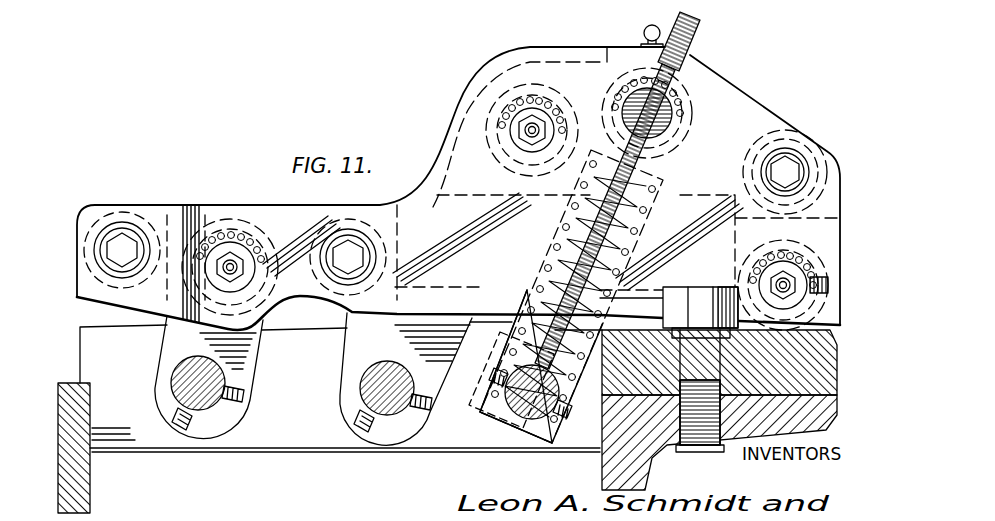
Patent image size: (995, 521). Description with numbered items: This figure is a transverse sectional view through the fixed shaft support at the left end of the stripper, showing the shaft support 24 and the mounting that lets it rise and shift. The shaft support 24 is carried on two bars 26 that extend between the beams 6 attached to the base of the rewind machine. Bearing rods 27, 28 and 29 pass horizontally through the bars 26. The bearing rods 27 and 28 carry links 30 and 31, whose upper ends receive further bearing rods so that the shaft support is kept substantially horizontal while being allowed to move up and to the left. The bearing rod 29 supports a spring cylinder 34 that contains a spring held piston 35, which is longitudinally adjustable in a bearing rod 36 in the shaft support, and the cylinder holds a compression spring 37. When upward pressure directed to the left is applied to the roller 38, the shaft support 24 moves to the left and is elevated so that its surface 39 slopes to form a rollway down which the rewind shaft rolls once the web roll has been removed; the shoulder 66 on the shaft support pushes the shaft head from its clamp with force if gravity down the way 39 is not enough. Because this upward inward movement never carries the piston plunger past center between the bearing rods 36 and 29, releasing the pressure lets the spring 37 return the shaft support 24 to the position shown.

The beams 6 is at (92, 472).
The shaft support 24 is at (173, 212).
The bars 26 is at (137, 371).
The bearing rod 27 is at (210, 407).
The bearing rod 28 is at (353, 392).
The bearing rod 29 is at (512, 408).
The link 30 is at (172, 344).
The link 31 is at (362, 345).
The spring cylinder 34 is at (664, 175).
The spring held piston 35 is at (703, 32).
The bearing rod 36 is at (672, 113).
The compression spring 37 is at (647, 211).
The roller 38 is at (747, 242).
The surface 39 is at (262, 212).
The shoulder 66 is at (452, 112).